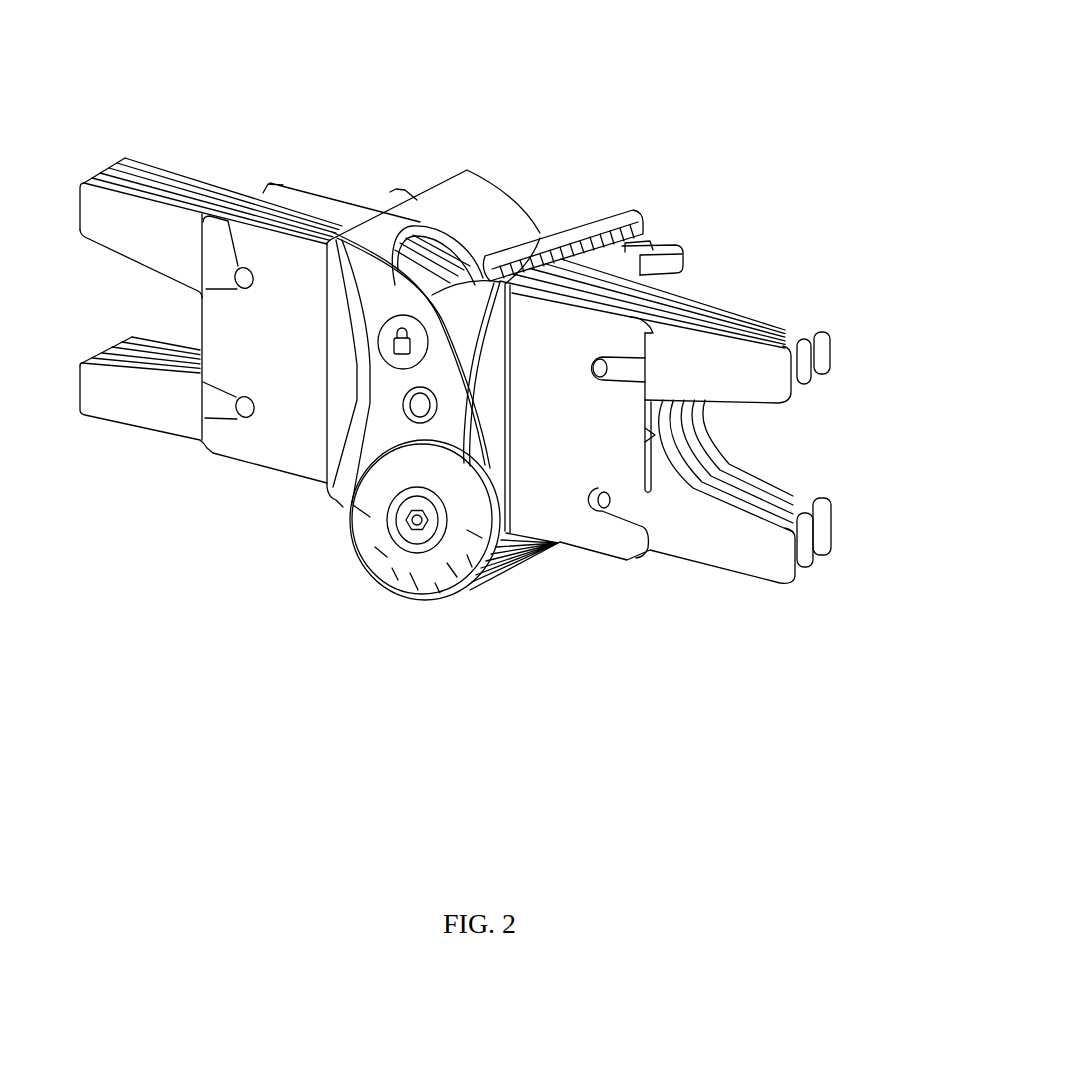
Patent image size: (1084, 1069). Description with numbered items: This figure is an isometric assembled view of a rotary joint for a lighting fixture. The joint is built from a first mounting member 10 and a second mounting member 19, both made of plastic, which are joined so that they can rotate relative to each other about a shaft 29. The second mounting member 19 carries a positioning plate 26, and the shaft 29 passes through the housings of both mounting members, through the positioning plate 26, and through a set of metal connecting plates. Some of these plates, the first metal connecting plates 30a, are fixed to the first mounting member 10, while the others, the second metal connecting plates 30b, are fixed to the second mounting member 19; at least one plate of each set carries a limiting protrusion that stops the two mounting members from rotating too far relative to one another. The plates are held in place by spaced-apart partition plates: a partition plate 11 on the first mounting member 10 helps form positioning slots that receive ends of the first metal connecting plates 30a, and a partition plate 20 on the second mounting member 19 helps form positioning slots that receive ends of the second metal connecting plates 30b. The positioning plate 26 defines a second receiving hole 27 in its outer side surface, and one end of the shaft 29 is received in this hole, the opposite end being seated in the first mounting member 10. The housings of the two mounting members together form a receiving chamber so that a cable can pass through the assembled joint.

The first mounting member 10 is at (583, 232).
The partition plate 11 is at (560, 430).
The second mounting member 19 is at (444, 200).
The partition plate 20 is at (247, 348).
The positioning plate 26 is at (393, 397).
The second receiving hole 27 is at (400, 548).
The shaft 29 is at (408, 525).
The first metal connecting plates 30a is at (825, 322).
The second metal connecting plates 30b is at (150, 178).